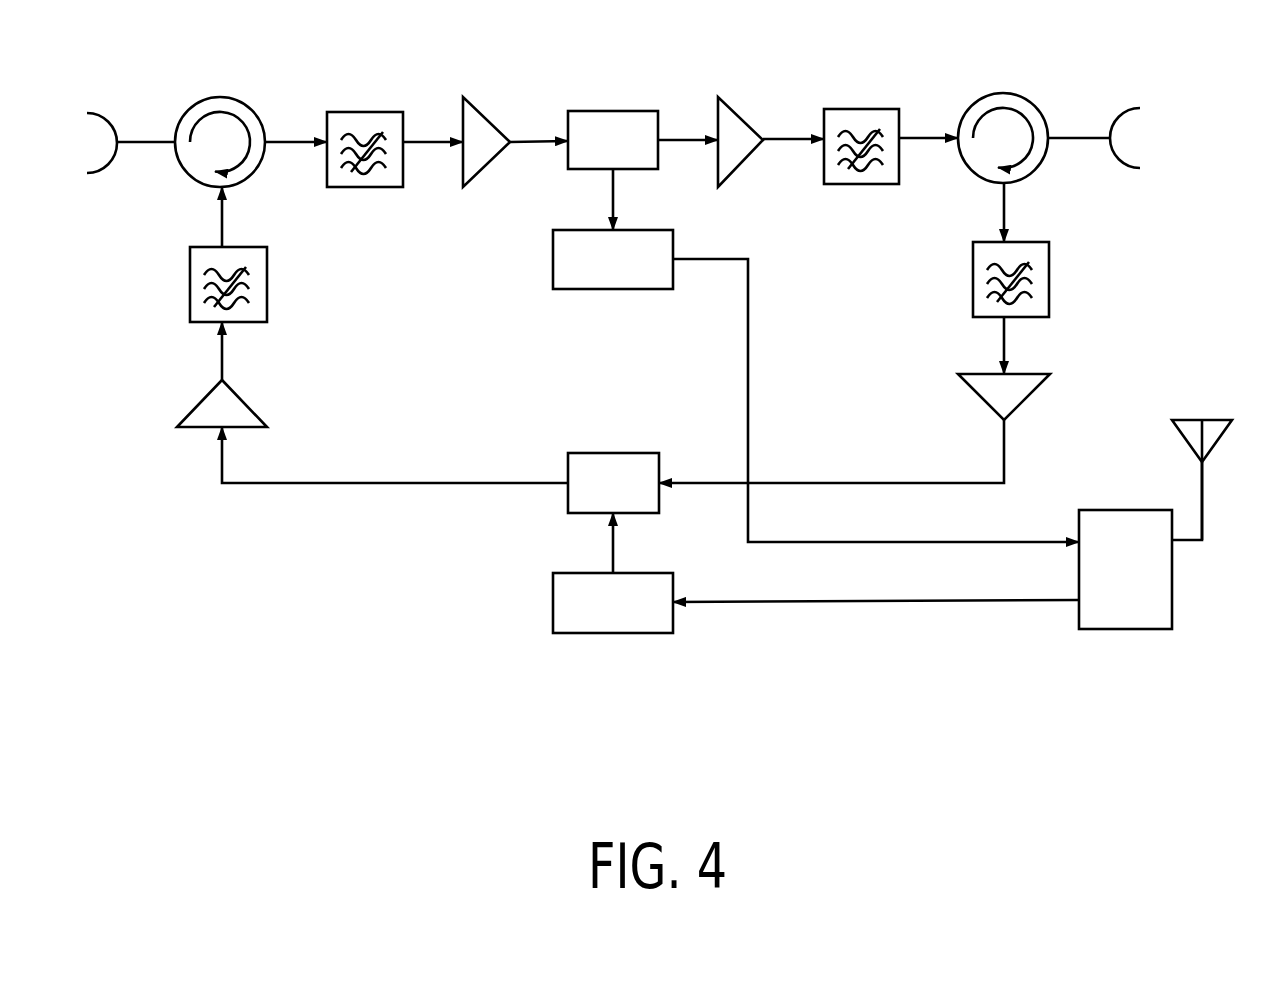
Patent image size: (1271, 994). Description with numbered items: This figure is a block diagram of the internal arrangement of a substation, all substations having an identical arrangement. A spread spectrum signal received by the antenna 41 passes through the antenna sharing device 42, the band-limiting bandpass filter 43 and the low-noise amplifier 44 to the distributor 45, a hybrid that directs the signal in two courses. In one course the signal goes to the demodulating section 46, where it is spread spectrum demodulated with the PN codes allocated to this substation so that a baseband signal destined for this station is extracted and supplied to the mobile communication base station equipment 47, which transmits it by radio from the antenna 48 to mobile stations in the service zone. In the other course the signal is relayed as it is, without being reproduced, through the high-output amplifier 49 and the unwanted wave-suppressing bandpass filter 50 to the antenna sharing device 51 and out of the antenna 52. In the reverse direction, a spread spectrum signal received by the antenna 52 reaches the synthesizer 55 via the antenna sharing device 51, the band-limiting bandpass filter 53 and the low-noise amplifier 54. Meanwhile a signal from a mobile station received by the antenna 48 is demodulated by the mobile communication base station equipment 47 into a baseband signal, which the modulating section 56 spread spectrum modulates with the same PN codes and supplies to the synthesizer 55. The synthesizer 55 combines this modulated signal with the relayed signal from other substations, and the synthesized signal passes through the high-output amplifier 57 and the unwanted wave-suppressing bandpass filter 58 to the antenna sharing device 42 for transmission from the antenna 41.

The antenna 41 is at (110, 128).
The antenna sharing device 42 is at (247, 104).
The band-limiting bandpass filter 43 is at (367, 112).
The low-noise amplifier 44 is at (494, 122).
The distributor 45 is at (622, 110).
The demodulating section 46 is at (627, 290).
The mobile communication base station equipment 47 is at (1127, 629).
The antenna 48 is at (1207, 420).
The high-output amplifier 49 is at (747, 112).
The unwanted wave-suppressing bandpass filter 50 is at (867, 108).
The antenna sharing device 51 is at (1005, 93).
The antenna 52 is at (1125, 108).
The band-limiting bandpass filter 53 is at (1050, 260).
The low-noise amplifier 54 is at (1027, 400).
The synthesizer 55 is at (623, 452).
The modulating section 56 is at (628, 633).
The high-output amplifier 57 is at (243, 402).
The unwanted wave-suppressing bandpass filter 58 is at (190, 277).